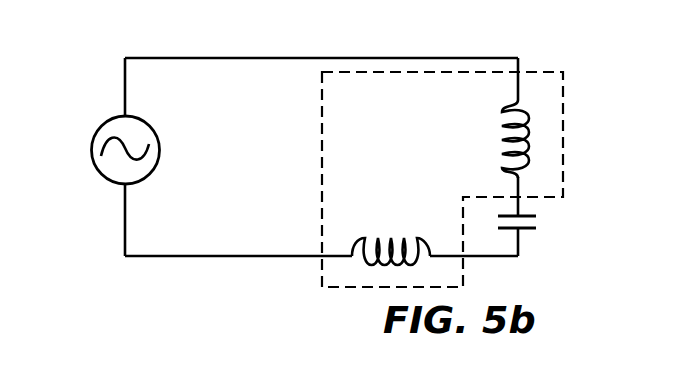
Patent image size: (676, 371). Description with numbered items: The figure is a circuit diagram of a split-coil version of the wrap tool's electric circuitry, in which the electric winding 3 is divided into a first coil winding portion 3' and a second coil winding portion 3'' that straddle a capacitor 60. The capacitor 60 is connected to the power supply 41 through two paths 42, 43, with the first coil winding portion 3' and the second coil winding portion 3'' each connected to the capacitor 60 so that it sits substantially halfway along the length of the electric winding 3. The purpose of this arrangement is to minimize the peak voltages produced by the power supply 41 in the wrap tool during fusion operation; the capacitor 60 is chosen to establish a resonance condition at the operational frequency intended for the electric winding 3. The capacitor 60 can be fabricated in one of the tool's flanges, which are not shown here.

The power supply 41 is at (92, 133).
The path 42 is at (207, 56).
The path 43 is at (172, 258).
The electric winding 3 is at (442, 179).
The first coil winding portion 3' is at (485, 156).
The second coil winding portion 3'' is at (391, 224).
The capacitor 60 is at (527, 230).